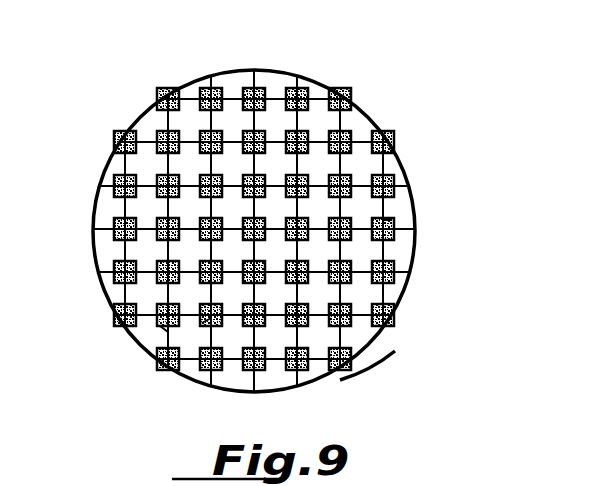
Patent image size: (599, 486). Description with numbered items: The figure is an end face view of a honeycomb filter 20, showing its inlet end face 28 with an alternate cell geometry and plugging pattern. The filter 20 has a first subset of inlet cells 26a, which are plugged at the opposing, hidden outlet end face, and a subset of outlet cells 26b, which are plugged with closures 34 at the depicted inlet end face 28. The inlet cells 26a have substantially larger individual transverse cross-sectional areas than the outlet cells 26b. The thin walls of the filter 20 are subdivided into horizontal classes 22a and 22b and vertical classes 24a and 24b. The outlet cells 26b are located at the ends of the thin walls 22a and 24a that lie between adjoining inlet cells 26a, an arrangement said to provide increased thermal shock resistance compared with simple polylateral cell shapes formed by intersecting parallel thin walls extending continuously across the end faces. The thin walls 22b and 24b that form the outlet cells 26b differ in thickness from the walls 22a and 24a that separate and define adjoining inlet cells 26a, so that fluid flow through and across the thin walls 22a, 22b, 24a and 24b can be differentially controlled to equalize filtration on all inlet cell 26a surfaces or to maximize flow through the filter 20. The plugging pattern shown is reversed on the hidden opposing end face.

The honeycomb filter body 20 is at (410, 291).
The horizontal class thin walls 22a is at (145, 180).
The horizontal class thin walls 22b is at (70, 256).
The vertical class thin walls 24a is at (253, 74).
The vertical class thin walls 24b is at (157, 314).
The inlet cells 26a is at (270, 125).
The outlet cells 26b is at (347, 128).
The inlet end face 28 is at (362, 344).
The closures 34 is at (393, 222).